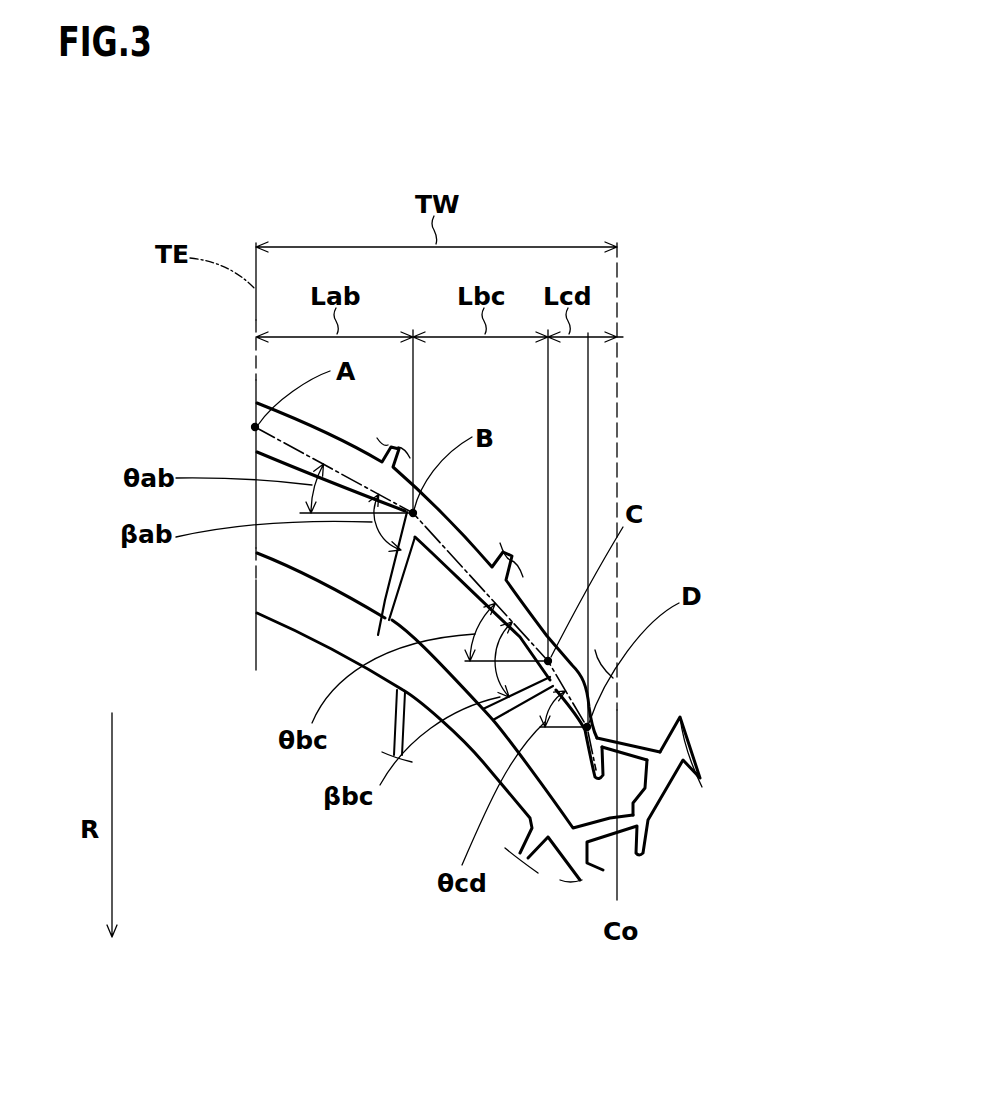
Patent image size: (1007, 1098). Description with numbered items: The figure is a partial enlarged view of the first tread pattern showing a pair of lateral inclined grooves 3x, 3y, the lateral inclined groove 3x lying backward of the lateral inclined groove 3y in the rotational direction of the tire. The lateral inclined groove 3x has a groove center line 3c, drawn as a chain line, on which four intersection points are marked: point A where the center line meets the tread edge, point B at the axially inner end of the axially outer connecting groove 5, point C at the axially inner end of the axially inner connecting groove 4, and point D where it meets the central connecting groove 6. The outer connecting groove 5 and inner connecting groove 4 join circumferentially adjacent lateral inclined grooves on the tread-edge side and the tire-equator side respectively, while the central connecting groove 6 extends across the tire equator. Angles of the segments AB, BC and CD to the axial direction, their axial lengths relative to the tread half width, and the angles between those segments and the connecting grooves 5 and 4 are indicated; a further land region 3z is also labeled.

The groove center line 3c is at (322, 455).
The lateral inclined groove 3x is at (275, 442).
The lateral inclined groove 3y is at (297, 597).
The land portion (inner) 3z is at (672, 758).
The axially inner connecting groove 4 is at (483, 712).
The axially outer connecting groove 5 is at (387, 582).
The central connecting groove 6 is at (633, 747).